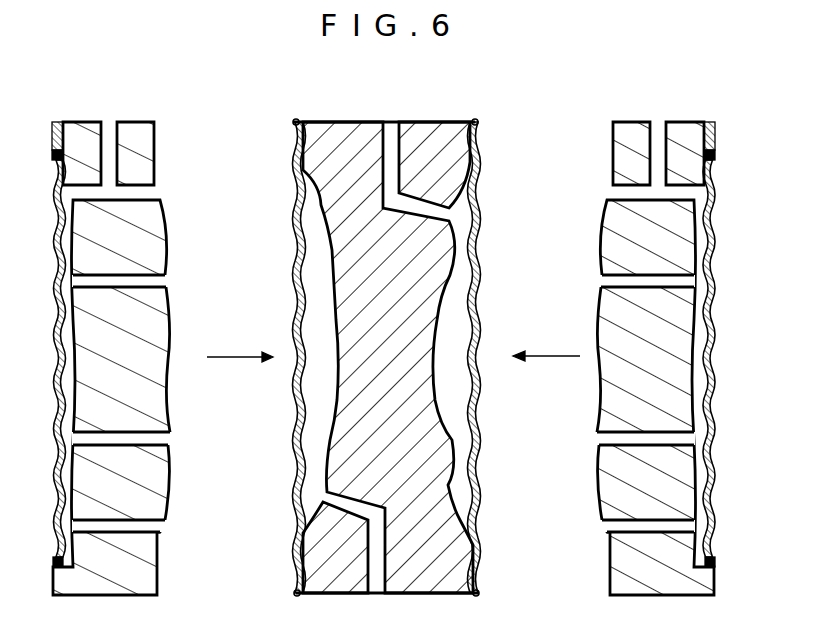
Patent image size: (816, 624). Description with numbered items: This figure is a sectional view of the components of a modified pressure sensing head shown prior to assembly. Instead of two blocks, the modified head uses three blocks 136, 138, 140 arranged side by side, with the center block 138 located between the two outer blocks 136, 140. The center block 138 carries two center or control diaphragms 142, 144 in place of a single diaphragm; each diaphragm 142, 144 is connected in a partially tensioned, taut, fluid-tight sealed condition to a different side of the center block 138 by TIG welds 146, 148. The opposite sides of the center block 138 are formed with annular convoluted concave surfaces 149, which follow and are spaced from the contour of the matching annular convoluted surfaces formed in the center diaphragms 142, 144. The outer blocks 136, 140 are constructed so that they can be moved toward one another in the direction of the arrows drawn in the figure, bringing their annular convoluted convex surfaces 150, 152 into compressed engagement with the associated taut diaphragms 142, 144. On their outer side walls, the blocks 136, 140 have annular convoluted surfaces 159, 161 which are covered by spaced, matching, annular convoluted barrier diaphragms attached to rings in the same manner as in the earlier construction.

The block 136 is at (76, 122).
The center block 138 is at (412, 122).
The block 140 is at (678, 122).
The center diaphragm 142 is at (297, 332).
The center diaphragm 144 is at (479, 296).
The TIG weld 146 is at (324, 90).
The TIG weld 148 is at (479, 122).
The annular convoluted concave surface 149 is at (455, 460).
The annular convoluted convex surface 150 is at (170, 272).
The annular convoluted convex surface 152 is at (606, 232).
The annular convoluted surface 159 is at (58, 450).
The annular convoluted surface 161 is at (712, 430).